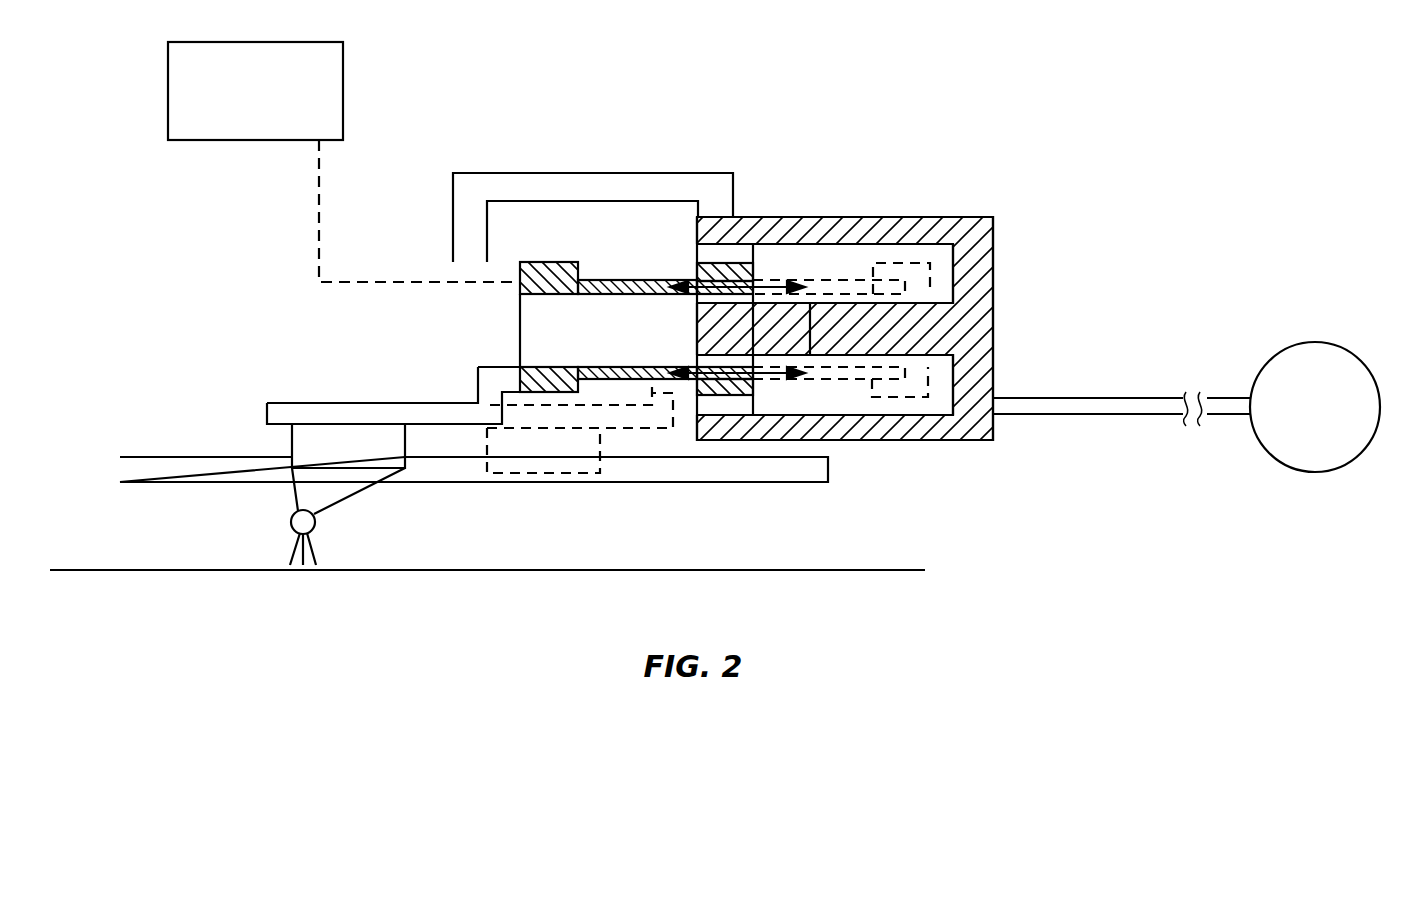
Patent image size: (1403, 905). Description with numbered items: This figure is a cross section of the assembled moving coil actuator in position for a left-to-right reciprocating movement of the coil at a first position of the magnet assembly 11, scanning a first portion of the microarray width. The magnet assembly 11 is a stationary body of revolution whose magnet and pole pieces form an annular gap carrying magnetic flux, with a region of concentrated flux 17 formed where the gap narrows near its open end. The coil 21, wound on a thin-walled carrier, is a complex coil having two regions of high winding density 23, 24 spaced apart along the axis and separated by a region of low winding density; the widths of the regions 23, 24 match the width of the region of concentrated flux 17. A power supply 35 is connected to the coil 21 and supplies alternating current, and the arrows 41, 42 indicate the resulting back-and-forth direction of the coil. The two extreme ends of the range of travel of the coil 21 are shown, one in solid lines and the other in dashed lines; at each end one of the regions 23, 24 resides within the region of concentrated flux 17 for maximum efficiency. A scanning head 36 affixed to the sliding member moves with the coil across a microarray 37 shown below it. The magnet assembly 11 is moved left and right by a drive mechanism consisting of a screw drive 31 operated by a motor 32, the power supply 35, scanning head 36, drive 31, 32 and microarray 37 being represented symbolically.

The magnet assembly 11 is at (877, 217).
The region of concentrated flux 17 is at (727, 258).
The coil 21 is at (620, 280).
The region of high winding density 23 is at (547, 262).
The region of high winding density 24 is at (908, 285).
The screw drive 31 is at (1094, 398).
The motor 32 is at (1330, 343).
The power supply 35 is at (343, 56).
The scanning head 36 is at (315, 520).
The microarray 37 is at (782, 570).
The arrow 41 is at (690, 296).
The arrow 42 is at (690, 366).